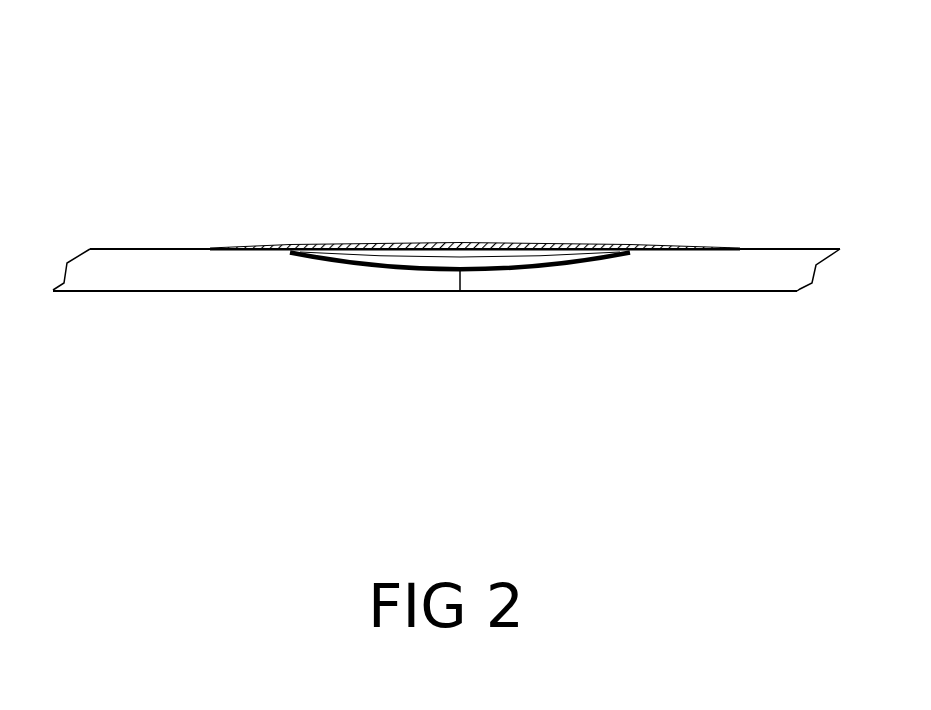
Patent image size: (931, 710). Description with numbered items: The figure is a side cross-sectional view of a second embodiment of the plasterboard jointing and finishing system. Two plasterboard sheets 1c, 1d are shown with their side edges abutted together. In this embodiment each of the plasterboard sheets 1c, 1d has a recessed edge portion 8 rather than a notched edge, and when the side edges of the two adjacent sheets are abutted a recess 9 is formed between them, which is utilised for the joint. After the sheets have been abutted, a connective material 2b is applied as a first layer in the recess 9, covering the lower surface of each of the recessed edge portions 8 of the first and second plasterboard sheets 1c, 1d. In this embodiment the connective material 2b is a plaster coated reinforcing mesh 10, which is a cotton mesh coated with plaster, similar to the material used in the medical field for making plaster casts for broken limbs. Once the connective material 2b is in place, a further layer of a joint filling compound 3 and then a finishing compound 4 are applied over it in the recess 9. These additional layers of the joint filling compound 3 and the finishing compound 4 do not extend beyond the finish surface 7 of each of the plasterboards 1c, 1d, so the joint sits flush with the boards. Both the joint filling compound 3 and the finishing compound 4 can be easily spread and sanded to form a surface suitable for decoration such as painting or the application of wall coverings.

The finish surface 7 is at (95, 249).
The plasterboard sheet 1c is at (89, 282).
The plasterboard sheet 1d is at (795, 285).
The finishing compound 4 is at (352, 249).
The joint filling compound 3 is at (456, 253).
The recess 9 is at (542, 195).
The recessed edge portion 8 is at (388, 275).
The connective material 2b is at (489, 270).
The plaster coated reinforcing mesh 10 is at (489, 270).